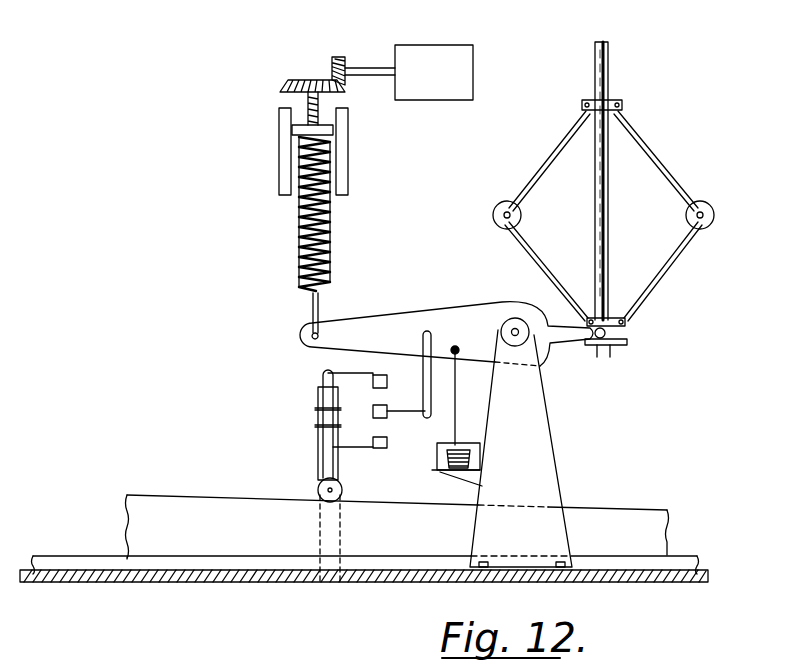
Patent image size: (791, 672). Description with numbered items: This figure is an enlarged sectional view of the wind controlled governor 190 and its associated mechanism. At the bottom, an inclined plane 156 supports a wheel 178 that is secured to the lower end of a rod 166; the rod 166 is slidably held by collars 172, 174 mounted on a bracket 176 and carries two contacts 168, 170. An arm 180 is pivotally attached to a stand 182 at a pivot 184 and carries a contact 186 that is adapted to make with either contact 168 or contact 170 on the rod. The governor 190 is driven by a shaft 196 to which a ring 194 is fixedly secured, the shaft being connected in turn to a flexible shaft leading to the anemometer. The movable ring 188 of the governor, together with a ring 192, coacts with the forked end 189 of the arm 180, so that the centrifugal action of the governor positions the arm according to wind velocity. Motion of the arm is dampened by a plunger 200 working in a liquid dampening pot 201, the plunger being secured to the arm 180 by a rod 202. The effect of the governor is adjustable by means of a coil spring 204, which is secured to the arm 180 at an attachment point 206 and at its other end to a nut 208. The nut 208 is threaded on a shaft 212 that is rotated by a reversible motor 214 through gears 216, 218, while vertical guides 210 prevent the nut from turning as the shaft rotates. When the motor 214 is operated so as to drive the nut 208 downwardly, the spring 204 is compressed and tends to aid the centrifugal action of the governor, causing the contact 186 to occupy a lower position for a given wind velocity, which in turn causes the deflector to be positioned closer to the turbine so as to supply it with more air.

The inclined plane 156 is at (224, 500).
The rod 166 is at (322, 375).
The contact 168 is at (388, 384).
The contact 170 is at (379, 448).
The collar 172 is at (318, 410).
The collar 174 is at (318, 427).
The bracket 176 is at (318, 456).
The wheel 178 is at (320, 482).
The arm 180 is at (401, 310).
The stand 182 is at (556, 450).
The pivot 184 is at (513, 326).
The contact 186 is at (390, 419).
The movable ring 188 is at (626, 322).
The forked end 189 is at (579, 339).
The governor 190 is at (683, 305).
The ring 192 is at (628, 343).
The ring 194 is at (620, 102).
The shaft 196 is at (608, 240).
The plunger 200 is at (482, 457).
The liquid dampening pot 201 is at (432, 471).
The rod 202 is at (458, 412).
The coil spring 204 is at (300, 239).
The spring attachment point 206 is at (306, 336).
The nut 208 is at (336, 129).
The vertical guides 210 is at (279, 151).
The shaft 212 is at (306, 109).
The reversible motor 214 is at (473, 72).
The gear 216 is at (336, 53).
The gear 218 is at (295, 78).